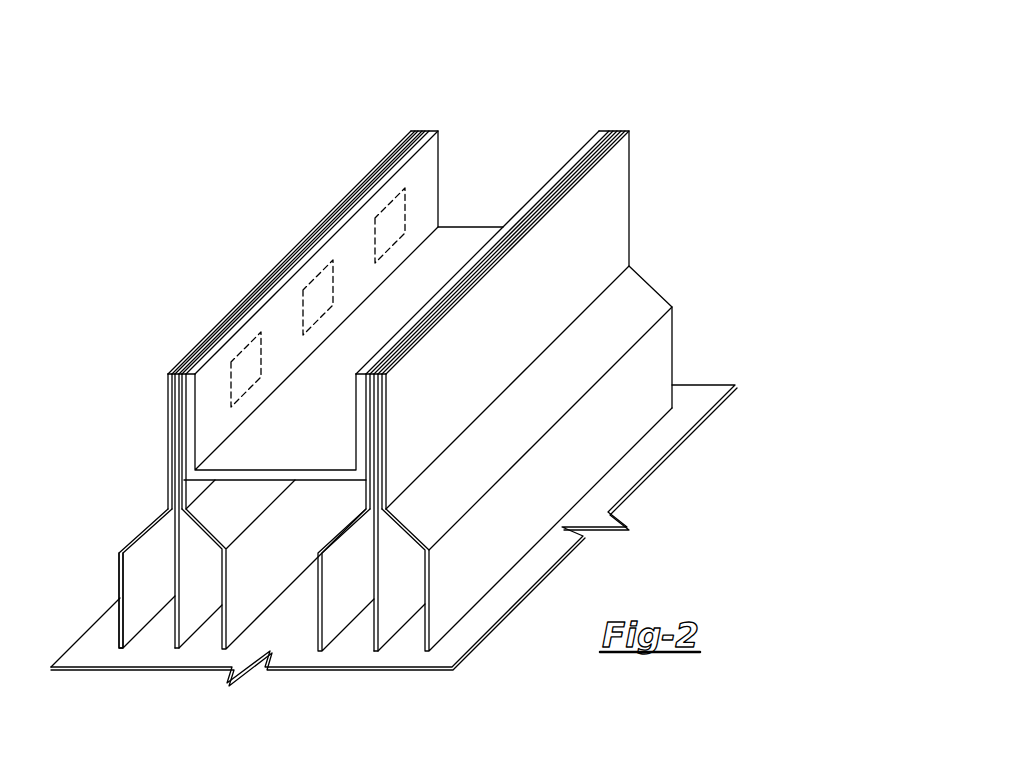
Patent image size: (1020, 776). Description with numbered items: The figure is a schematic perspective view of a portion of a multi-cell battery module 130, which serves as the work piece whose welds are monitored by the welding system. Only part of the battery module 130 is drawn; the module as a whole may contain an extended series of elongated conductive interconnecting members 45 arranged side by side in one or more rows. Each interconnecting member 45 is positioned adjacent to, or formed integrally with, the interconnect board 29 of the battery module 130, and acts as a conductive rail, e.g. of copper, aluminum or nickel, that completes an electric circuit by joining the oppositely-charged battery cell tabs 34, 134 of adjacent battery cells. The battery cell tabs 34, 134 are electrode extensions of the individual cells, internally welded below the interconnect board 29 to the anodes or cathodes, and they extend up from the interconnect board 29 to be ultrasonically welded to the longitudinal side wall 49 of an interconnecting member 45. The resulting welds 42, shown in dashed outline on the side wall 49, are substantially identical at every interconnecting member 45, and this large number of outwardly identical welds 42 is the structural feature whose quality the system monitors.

The interconnect board 29 is at (82, 656).
The interconnecting member 45 is at (543, 97).
The longitudinal side wall 49 is at (437, 168).
The welds 42 is at (395, 217).
The multi-cell battery module 130 is at (745, 215).
The battery cell tab 134 is at (435, 615).
The battery cell tab 34 is at (132, 593).